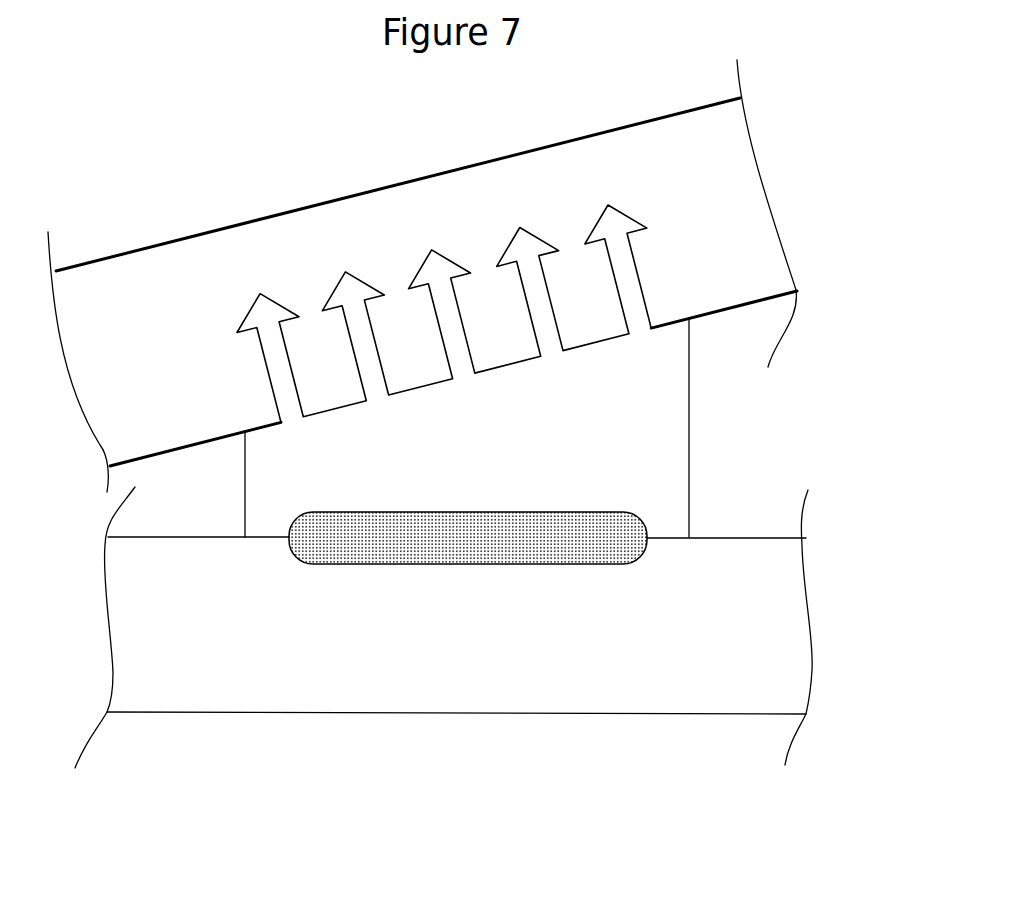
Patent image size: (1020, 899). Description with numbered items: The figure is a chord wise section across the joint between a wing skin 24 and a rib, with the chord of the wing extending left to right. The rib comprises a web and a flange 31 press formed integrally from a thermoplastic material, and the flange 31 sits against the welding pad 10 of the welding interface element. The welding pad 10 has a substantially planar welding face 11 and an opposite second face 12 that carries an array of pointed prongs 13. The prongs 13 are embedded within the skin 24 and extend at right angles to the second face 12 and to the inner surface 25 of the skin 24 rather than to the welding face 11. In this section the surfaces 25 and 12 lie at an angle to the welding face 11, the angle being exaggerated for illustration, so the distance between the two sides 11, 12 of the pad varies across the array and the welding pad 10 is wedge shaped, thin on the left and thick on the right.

The welding pad 10 is at (641, 466).
The welding face 11 is at (280, 537).
The second face 12 is at (267, 425).
The pointed prongs 13 is at (260, 293).
The wing skin 24 is at (525, 152).
The inner surface of the skin 25 is at (720, 317).
The flange 31 is at (423, 663).